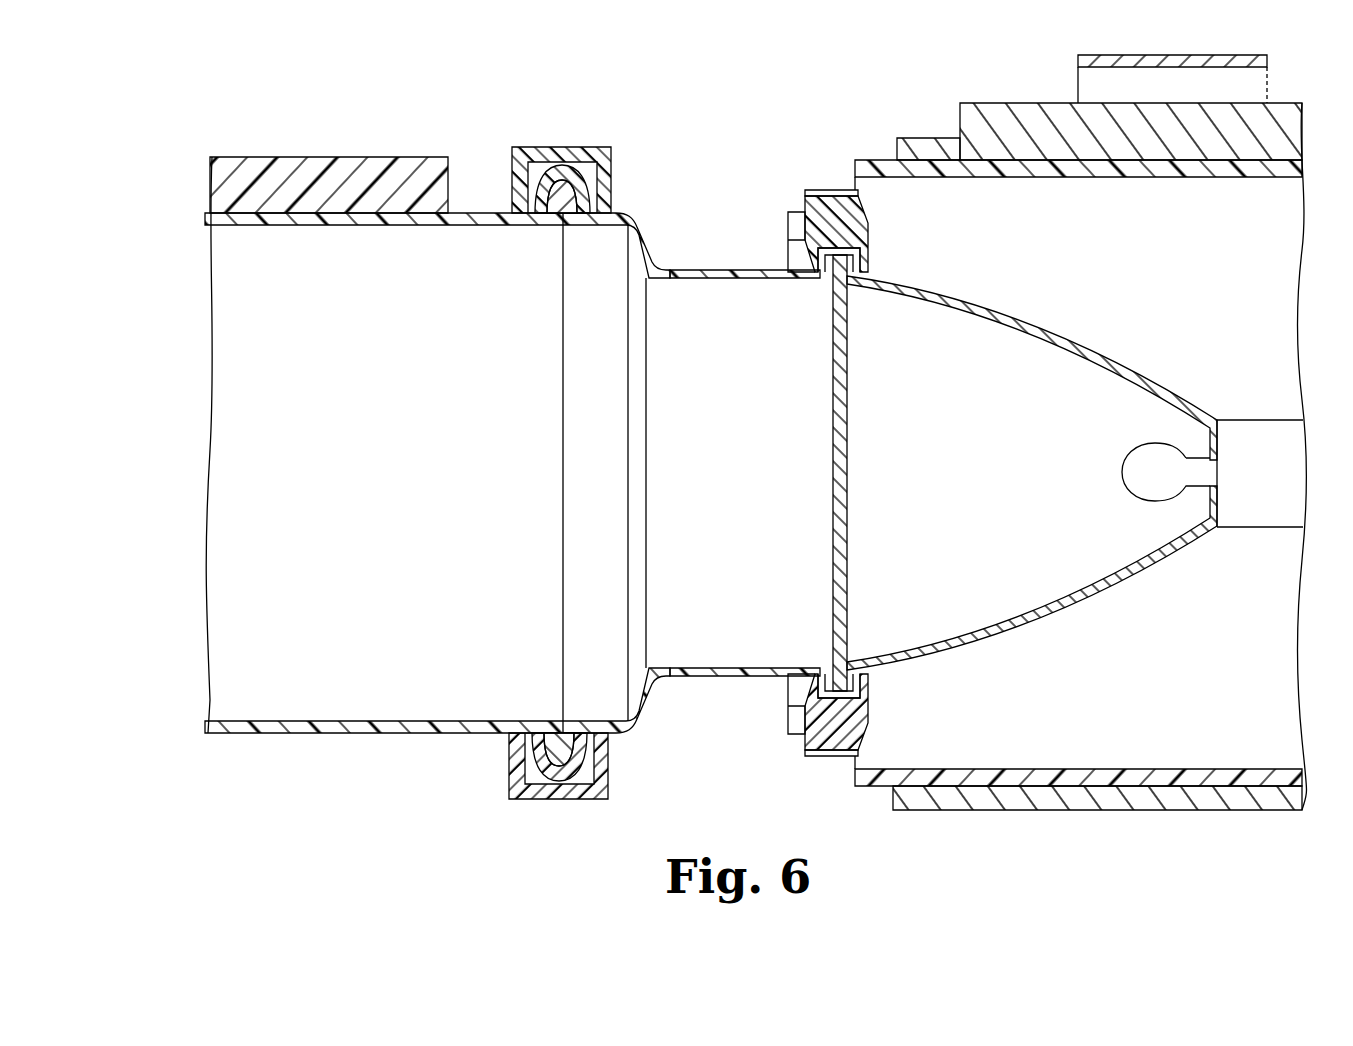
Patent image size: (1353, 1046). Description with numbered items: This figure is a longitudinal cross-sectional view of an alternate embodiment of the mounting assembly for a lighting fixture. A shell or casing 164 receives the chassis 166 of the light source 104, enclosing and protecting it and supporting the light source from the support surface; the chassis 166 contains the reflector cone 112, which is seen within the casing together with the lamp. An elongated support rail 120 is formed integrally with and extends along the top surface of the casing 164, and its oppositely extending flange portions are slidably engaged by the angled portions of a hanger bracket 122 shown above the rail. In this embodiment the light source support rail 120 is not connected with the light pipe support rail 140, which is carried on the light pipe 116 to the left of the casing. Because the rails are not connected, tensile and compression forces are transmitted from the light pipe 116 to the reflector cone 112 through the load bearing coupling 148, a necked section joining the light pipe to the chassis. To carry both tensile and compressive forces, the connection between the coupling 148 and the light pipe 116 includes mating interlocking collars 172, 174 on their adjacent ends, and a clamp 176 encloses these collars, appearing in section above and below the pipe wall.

The light source 104 is at (1152, 646).
The reflector cone 112 is at (1035, 328).
The light pipe 116 is at (262, 730).
The support rail 120 is at (1013, 118).
The hanger bracket 122 is at (1245, 81).
The light pipe support rail 140 is at (278, 165).
The load bearing coupling 148 is at (713, 677).
The casing 164 is at (921, 140).
The chassis 166 is at (858, 162).
The interlocking collar 172 is at (528, 190).
The interlocking collar 174 is at (600, 183).
The clamp 176 is at (575, 156).